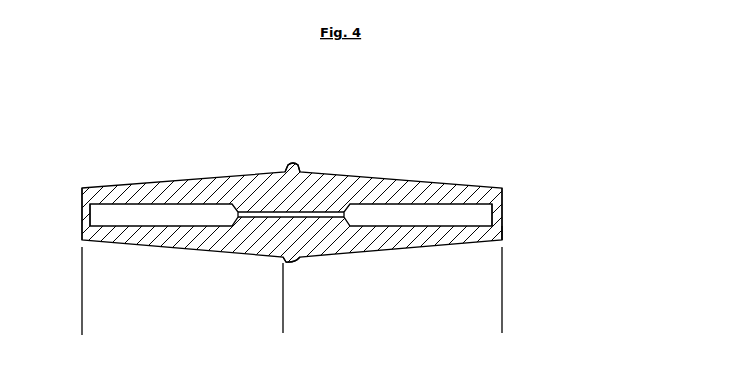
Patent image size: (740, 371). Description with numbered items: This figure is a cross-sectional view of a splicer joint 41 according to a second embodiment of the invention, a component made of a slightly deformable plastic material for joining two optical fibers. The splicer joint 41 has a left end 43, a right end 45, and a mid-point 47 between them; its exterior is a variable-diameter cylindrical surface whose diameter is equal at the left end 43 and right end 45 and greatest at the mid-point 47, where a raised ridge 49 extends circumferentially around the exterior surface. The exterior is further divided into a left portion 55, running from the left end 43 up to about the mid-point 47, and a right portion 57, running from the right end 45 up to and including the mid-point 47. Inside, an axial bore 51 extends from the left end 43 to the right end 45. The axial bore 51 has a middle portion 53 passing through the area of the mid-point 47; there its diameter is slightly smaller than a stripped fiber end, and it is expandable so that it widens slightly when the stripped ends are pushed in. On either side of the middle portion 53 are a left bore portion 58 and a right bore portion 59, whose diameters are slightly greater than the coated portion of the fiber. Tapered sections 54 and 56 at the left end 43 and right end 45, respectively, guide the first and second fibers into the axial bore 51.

The splicer joint 41 is at (373, 138).
The left end 43 is at (82, 188).
The right end 45 is at (502, 188).
The mid-point 47 is at (290, 156).
The raised ridge 49 is at (287, 165).
The axial bore 51 is at (508, 213).
The middle portion 53 is at (307, 215).
The tapered section 54 is at (85, 228).
The left portion 55 is at (283, 307).
The tapered section 56 is at (496, 230).
The right portion 57 is at (283, 307).
The left bore portion 58 is at (152, 212).
The right bore portion 59 is at (413, 215).